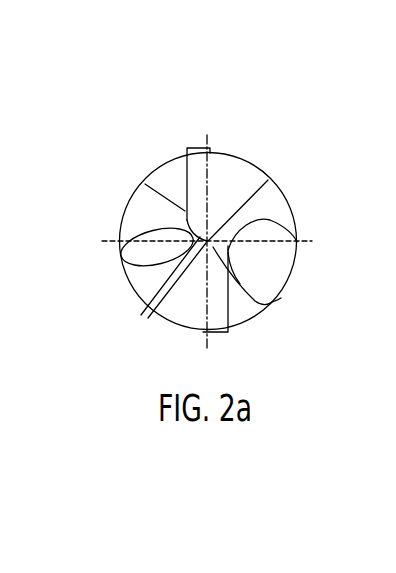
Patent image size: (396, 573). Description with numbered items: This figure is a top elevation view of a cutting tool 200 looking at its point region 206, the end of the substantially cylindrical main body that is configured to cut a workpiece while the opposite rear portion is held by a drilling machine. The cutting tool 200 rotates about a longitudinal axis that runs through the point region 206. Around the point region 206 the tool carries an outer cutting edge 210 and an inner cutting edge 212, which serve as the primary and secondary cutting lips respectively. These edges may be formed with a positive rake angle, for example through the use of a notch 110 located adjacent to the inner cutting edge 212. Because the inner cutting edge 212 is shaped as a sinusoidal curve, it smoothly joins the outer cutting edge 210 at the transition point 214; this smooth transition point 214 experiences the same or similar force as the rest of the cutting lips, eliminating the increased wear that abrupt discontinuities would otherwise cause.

The cutting tool 200 is at (205, 114).
The notch 110 is at (208, 241).
The point region 206 is at (208, 241).
The outer cutting edge 210 is at (187, 186).
The inner cutting edge 212 is at (145, 184).
The transition point 214 is at (212, 246).